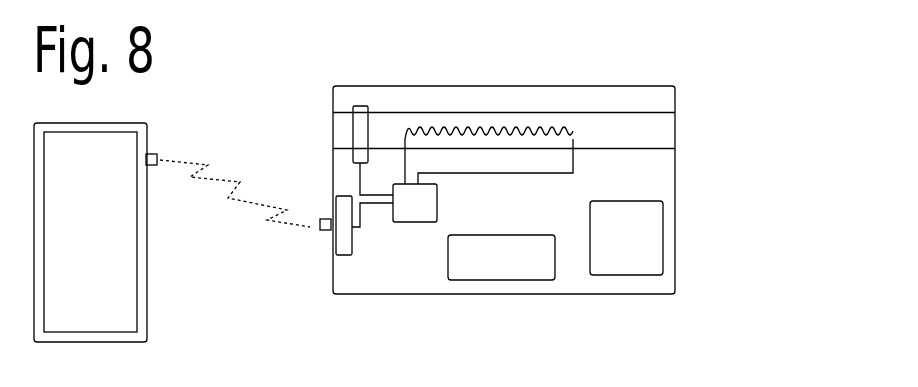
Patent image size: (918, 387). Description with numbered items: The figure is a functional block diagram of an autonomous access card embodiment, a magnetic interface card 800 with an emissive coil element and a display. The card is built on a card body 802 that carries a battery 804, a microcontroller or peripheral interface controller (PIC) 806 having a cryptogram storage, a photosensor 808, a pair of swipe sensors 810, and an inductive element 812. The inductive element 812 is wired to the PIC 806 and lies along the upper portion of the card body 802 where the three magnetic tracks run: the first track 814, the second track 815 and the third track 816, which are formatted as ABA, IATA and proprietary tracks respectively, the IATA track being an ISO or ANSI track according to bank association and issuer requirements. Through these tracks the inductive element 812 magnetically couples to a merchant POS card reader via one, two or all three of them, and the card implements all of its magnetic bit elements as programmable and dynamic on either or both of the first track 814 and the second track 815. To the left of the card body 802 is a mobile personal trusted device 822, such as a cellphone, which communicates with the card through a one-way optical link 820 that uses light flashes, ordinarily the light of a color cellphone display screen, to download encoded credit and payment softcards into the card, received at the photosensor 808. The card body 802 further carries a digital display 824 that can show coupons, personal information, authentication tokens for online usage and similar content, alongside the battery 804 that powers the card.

The magnetic interface card 800 is at (271, 36).
The card body 802 is at (333, 279).
The battery 804 is at (520, 235).
The peripheral interface controller (PIC) 806 is at (438, 193).
The photosensor 808 is at (352, 237).
The swipe sensors 810 is at (364, 105).
The inductive element 812 is at (574, 124).
The track-1 814 is at (660, 122).
The track-2 815 is at (660, 131).
The track-3 816 is at (660, 141).
The one-way optical link 820 is at (249, 182).
The mobile personal trusted device 822 is at (78, 256).
The digital display 824 is at (614, 258).